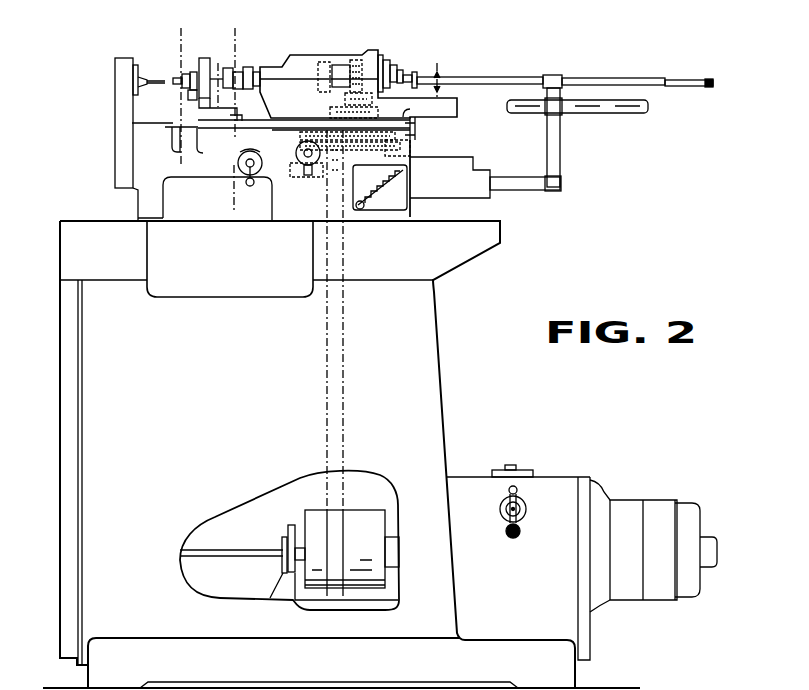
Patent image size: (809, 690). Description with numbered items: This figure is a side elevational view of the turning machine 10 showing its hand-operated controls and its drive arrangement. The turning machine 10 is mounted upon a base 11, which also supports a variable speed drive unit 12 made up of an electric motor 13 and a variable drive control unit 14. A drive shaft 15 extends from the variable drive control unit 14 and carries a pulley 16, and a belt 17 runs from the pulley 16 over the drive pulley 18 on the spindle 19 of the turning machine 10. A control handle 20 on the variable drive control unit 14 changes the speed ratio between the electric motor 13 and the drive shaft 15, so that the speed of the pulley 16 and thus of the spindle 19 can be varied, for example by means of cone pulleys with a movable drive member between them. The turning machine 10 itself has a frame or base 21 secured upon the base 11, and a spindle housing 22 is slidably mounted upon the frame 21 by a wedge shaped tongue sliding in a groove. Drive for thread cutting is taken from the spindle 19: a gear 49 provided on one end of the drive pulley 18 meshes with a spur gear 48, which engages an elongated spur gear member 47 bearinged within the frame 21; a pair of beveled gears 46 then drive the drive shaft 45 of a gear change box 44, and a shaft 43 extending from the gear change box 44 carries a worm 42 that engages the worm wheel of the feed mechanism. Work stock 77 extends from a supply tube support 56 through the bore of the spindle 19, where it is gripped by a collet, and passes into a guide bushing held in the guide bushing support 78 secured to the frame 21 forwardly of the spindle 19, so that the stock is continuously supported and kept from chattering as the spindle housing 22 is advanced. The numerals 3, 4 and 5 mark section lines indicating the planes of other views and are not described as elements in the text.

The section line 3- 3 is at (334, 75).
The section line 4- 4 is at (198, 35).
The section line 5- 5 is at (222, 35).
The turning machine 10 is at (145, 162).
The base 11 is at (95, 382).
The variable speed drive unit 12 is at (565, 478).
The electric motor 13 is at (683, 510).
The variable drive control unit 14 is at (462, 487).
The drive shaft 15 is at (255, 548).
The pulley 16 is at (378, 522).
The belt 17 is at (338, 497).
The drive pulley 18 is at (327, 57).
The spindle 19 is at (249, 73).
The control handle 20 is at (511, 540).
The frame or base 21 is at (412, 218).
The spindle housing 22 is at (380, 50).
The worm 42 is at (280, 170).
The shaft 43 is at (332, 177).
The gear change box 44 is at (408, 201).
The drive shaft 45 is at (417, 157).
The beveled gears 46 is at (416, 137).
The elongated spur gear member 47 is at (300, 140).
The spur gear 48 is at (333, 100).
The gear 49 is at (362, 55).
The supply tube support 56 is at (633, 80).
The work stock 77 is at (498, 77).
The guide bushing support 78 is at (205, 57).